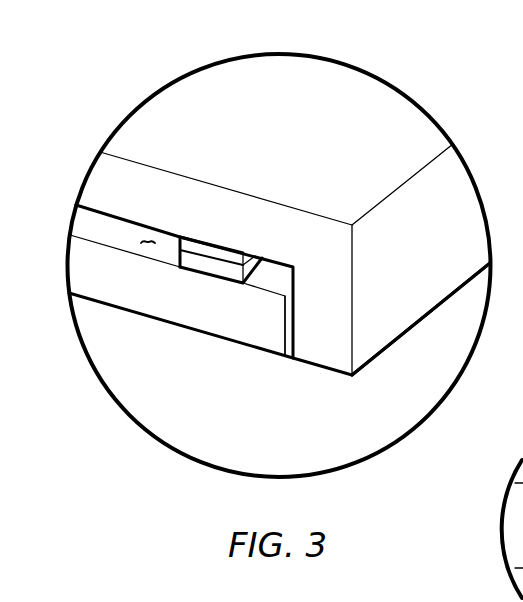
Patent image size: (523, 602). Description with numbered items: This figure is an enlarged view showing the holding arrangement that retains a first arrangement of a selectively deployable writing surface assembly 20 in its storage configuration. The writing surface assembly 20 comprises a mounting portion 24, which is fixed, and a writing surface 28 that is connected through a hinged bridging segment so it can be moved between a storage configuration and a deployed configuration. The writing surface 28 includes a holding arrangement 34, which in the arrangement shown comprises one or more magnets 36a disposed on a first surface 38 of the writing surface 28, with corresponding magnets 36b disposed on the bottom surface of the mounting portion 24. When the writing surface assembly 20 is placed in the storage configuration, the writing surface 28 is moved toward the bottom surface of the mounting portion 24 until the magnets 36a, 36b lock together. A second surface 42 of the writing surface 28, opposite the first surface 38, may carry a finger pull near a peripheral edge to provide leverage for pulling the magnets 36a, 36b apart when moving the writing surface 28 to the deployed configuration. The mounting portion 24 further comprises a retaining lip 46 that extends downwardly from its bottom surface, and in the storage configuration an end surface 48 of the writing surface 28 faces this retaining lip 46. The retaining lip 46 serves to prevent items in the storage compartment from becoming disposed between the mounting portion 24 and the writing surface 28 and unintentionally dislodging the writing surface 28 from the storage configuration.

The writing surface assembly 20 is at (289, 383).
The mounting portion 24 is at (128, 192).
The writing surface 28 is at (100, 281).
The holding arrangement 34 is at (227, 236).
The magnets 36a is at (229, 273).
The corresponding magnets 36b is at (208, 249).
The first surface 38 is at (148, 245).
The second surface 42 is at (160, 322).
The retaining lip 46 is at (335, 329).
The end surface 48 is at (287, 318).